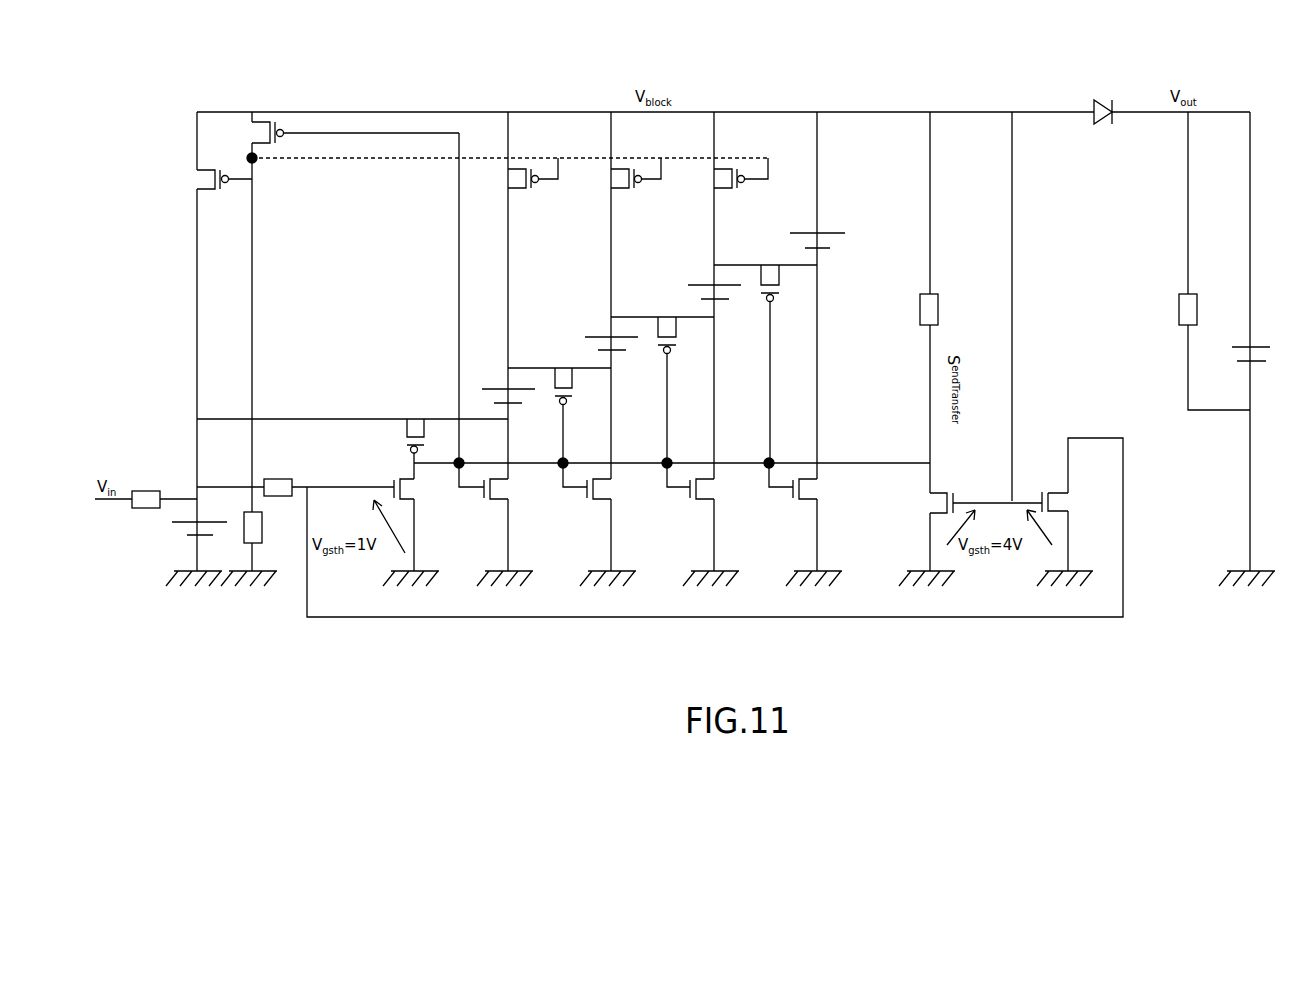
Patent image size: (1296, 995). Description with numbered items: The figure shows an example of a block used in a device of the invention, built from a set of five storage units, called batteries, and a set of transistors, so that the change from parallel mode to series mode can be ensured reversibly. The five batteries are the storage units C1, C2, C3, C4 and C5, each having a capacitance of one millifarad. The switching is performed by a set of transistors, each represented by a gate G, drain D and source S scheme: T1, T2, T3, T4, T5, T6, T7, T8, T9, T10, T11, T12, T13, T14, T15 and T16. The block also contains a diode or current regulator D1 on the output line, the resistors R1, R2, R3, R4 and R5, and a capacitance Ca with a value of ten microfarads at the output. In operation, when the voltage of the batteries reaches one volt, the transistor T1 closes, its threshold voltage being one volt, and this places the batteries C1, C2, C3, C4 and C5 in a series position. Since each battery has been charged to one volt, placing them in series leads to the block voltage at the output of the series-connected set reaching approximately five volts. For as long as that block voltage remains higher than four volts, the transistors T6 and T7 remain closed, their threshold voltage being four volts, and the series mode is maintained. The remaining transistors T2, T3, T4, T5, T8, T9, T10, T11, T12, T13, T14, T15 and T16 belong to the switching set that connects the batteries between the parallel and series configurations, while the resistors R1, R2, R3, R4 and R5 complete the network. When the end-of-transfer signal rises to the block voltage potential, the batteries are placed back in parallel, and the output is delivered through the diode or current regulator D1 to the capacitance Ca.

The transistor T1 is at (432, 490).
The transistor T2 is at (526, 490).
The transistor T3 is at (629, 490).
The transistor T4 is at (732, 490).
The transistor T5 is at (835, 490).
The transistor T6 is at (924, 508).
The transistor T7 is at (1075, 508).
The transistor T8 is at (423, 434).
The transistor T9 is at (559, 406).
The transistor T10 is at (662, 380).
The transistor T11 is at (765, 354).
The transistor T12 is at (203, 178).
The transistor T13 is at (253, 112).
The transistor T14 is at (551, 166).
The transistor T15 is at (654, 166).
The transistor T16 is at (758, 166).
The storage unit C1 is at (180, 528).
The storage unit C2 is at (494, 384).
The storage unit C3 is at (590, 333).
The storage unit C4 is at (694, 280).
The storage unit C5 is at (835, 241).
The capacitance Ca is at (1222, 353).
The resistor R1 is at (264, 527).
The resistor R2 is at (941, 309).
The resistor R3 is at (1174, 309).
The resistor R4 is at (278, 478).
The resistor R5 is at (146, 492).
The diode or current regulator D1 is at (1109, 140).